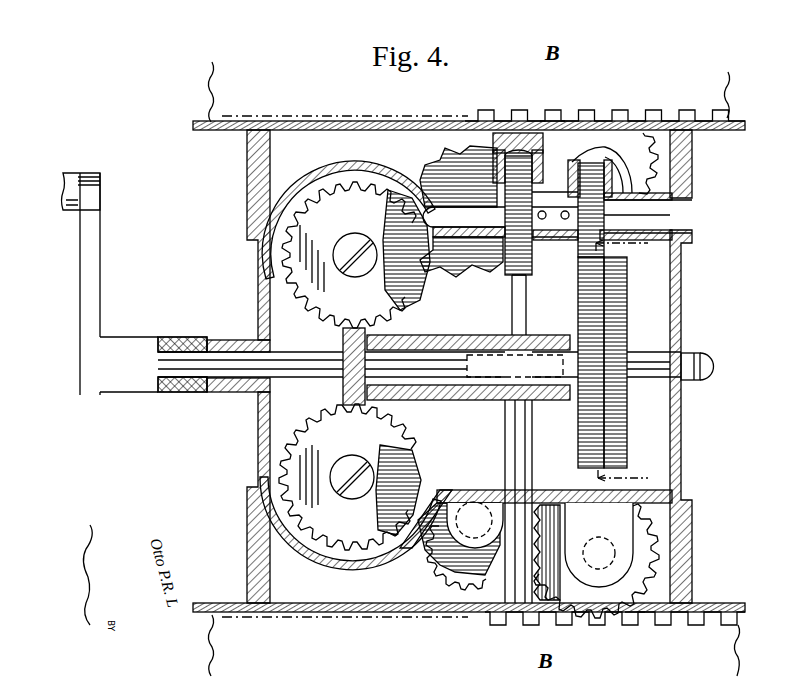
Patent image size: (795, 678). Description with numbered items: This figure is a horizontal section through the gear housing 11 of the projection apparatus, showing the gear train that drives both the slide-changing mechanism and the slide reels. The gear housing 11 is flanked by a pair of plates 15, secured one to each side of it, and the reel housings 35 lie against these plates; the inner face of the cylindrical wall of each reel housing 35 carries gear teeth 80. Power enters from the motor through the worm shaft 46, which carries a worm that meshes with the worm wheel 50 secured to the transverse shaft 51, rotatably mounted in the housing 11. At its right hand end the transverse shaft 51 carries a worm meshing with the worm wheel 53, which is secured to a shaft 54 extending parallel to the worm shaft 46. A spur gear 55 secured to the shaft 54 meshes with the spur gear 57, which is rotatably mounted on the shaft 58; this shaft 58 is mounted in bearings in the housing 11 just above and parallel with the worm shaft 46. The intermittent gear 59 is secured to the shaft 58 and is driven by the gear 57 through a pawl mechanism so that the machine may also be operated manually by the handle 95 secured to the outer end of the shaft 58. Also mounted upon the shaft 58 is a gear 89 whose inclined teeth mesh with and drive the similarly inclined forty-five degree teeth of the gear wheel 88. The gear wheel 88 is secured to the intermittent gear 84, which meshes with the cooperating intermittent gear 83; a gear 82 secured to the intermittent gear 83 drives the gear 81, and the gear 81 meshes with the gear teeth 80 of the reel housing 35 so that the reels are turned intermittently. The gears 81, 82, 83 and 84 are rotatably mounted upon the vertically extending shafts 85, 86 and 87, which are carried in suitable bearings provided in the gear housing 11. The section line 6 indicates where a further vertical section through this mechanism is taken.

The section line 6- 6 is at (627, 366).
The gear housing 11 is at (683, 431).
The plates 15 is at (735, 120).
The reel housings 35 is at (621, 360).
The worm shaft 46 is at (697, 353).
The worm wheel 50 is at (470, 392).
The transverse shaft 51 is at (526, 439).
The worm wheel 53 is at (532, 263).
The shaft 54 is at (463, 225).
The spur gear 55 is at (578, 266).
The spur gear 57 is at (586, 309).
The shaft 58 is at (440, 352).
The intermittent gear 59 is at (620, 438).
The gear teeth 80 is at (551, 112).
The gear 81 is at (593, 110).
The gear 82 is at (522, 566).
The intermittent gear 83 is at (440, 165).
The intermittent gear 84 is at (412, 290).
The shaft 85 is at (585, 568).
The shaft 86 is at (456, 566).
The shaft 87 is at (352, 233).
The gear wheel 88 is at (310, 307).
The gear 89 is at (343, 388).
The handle 95 is at (100, 288).